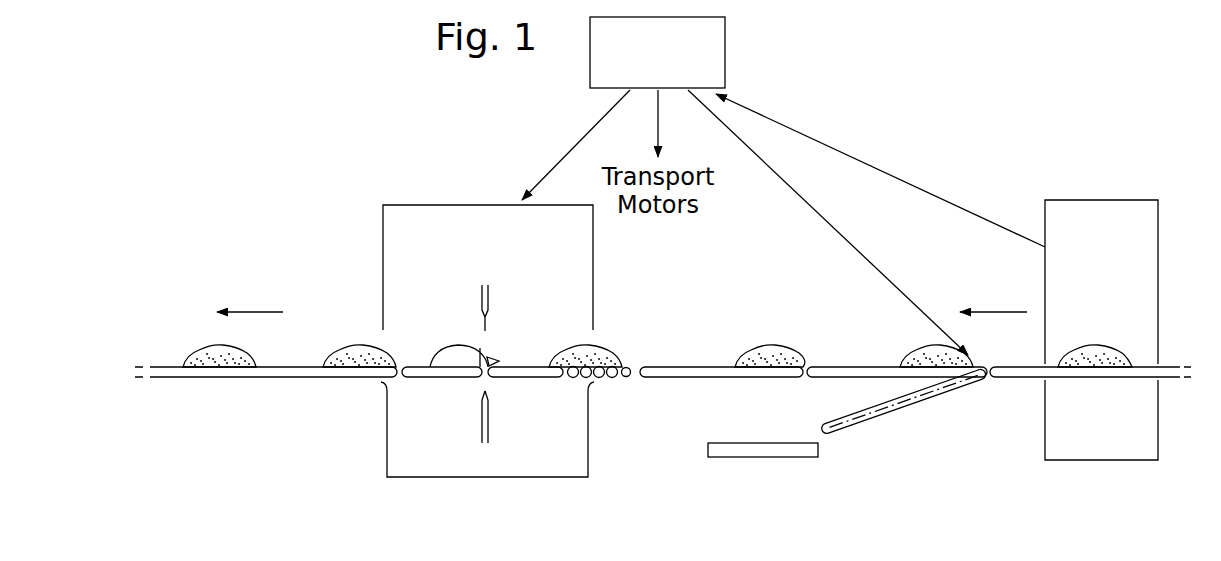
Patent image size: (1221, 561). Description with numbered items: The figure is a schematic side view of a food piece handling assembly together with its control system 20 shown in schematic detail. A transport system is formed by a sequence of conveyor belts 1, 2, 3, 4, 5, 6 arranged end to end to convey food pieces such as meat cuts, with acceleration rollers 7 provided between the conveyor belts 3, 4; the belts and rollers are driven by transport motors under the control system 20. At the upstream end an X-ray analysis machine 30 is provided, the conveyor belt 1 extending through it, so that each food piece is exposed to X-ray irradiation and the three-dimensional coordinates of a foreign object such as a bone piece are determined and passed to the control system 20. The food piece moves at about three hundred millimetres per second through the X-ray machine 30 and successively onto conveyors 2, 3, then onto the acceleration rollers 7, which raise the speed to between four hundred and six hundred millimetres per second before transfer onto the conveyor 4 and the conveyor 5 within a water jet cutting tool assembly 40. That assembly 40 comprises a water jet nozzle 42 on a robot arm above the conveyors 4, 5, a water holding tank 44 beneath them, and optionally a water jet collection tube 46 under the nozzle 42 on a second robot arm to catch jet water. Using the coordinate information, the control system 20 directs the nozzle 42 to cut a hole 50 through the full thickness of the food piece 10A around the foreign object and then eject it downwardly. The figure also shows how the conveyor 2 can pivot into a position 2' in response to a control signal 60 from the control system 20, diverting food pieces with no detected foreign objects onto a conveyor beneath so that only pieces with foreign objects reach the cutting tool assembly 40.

The conveyor belt 1 is at (1013, 380).
The conveyor belt 2 is at (897, 330).
The pivoted position of conveyor 2' is at (903, 416).
The conveyor belt 3 is at (687, 380).
The conveyor belt 4 is at (530, 380).
The conveyor belt 5 is at (432, 380).
The conveyor belt 6 is at (207, 380).
The acceleration rollers 7 is at (606, 382).
The food piece with cut hole 10A is at (447, 353).
The control system 20 is at (728, 40).
The X-ray analysis machine 30 is at (1110, 200).
The water jet cutting tool assembly 40 is at (408, 205).
The water jet nozzle 42 is at (488, 305).
The water holding tank 44 is at (387, 450).
The water jet collection tube 46 is at (488, 418).
The hole 50 is at (492, 358).
The control signal 60 is at (872, 262).